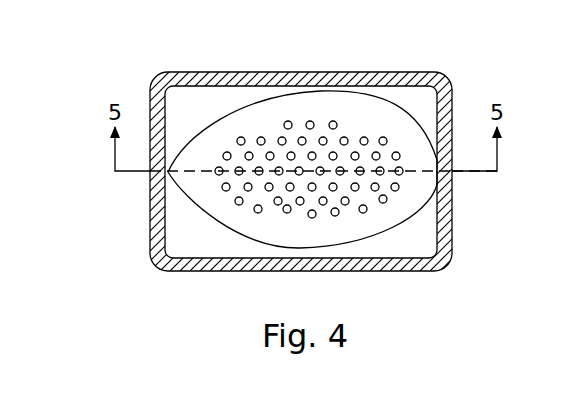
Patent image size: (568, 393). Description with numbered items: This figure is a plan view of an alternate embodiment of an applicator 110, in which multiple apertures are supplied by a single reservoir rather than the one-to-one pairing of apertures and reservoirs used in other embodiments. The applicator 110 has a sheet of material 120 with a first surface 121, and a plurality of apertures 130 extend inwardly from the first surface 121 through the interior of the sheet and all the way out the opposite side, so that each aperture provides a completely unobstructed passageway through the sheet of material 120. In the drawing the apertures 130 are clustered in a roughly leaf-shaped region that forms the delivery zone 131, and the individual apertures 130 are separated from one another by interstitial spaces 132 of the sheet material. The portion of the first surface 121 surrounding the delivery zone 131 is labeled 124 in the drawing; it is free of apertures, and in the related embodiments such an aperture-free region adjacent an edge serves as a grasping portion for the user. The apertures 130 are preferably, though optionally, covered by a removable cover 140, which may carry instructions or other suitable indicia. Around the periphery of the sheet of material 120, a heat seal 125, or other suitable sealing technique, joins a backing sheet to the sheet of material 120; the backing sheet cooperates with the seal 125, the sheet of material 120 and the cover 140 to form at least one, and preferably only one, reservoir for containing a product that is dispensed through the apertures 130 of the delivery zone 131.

The applicator 110 is at (413, 105).
The sheet of material 120 is at (430, 122).
The first surface 121 is at (396, 248).
The interior cavity 124 is at (188, 208).
The heat seal 125 is at (163, 270).
The apertures 130 is at (334, 121).
The delivery zone 131 is at (276, 208).
The interstitial spaces 132 is at (375, 205).
The removable cover 140 is at (210, 145).